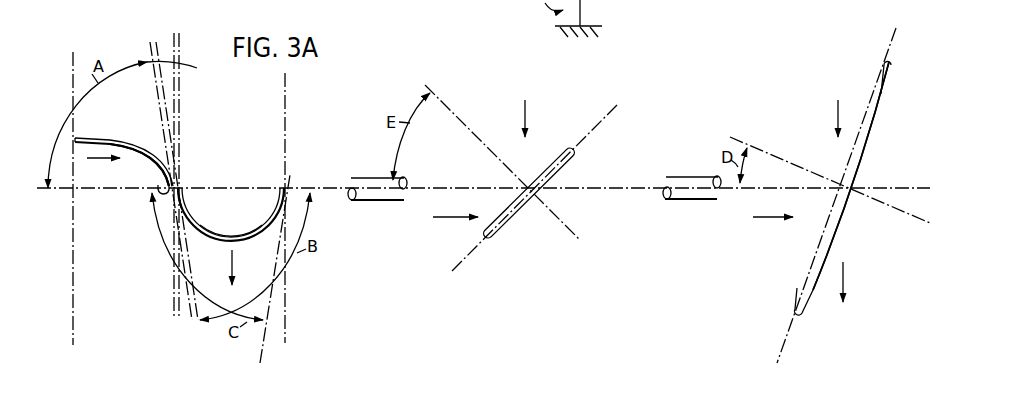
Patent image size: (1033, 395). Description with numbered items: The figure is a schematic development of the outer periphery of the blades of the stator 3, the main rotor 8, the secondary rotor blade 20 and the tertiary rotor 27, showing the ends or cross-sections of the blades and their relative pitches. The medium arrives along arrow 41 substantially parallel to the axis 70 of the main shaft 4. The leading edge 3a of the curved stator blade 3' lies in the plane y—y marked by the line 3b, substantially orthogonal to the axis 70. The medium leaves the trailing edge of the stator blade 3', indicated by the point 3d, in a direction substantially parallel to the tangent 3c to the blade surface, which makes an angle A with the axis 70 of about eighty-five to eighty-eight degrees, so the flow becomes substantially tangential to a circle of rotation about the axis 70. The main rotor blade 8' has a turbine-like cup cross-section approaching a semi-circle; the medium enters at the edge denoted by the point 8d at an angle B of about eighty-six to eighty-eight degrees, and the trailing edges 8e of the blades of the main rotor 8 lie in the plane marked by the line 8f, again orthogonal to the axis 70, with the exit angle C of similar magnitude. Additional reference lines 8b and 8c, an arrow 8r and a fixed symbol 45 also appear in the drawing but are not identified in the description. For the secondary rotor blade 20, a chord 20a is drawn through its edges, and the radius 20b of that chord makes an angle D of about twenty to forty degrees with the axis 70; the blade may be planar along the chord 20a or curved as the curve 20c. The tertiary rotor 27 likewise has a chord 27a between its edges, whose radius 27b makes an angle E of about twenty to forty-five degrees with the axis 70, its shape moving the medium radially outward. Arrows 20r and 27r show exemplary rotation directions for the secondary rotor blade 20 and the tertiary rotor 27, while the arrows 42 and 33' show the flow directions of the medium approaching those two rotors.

The stator 3 is at (124, 140).
The stator blade 3' is at (139, 152).
The leading edge of stator blade 3a is at (73, 141).
The line designating plane y—y 3b is at (75, 312).
The tangent to curved surface of stator blade 3c is at (156, 82).
The trailing edge point of stator blade 3d is at (165, 188).
The main shaft 4 is at (392, 202).
The main rotor 8 is at (231, 192).
The main rotor blade 8' is at (231, 223).
The vertical reference line 8b is at (181, 128).
The inclined reference line 8c is at (196, 340).
The entry edge point of main rotor blade 8d is at (183, 183).
The trailing edges of main rotor blades 8e is at (286, 182).
The line designating plane of trailing edges 8f is at (286, 320).
The direction of movement of channel member 8r is at (245, 266).
The secondary rotor blade 20 is at (888, 72).
The chord of secondary rotor blade 20a is at (912, 22).
The radius of chord 20b is at (768, 134).
The curve 20c is at (871, 152).
The arrow showing direction of rotation of secondary rotor 20r is at (835, 120).
The tertiary rotor 27 is at (557, 185).
The chord of tertiary rotor blade 27a is at (603, 118).
The radius of chord 27b is at (466, 127).
The arrow showing direction of rotation of tertiary rotor 27r is at (535, 116).
The arrow showing direction of flow 33' is at (454, 230).
The arrow showing direction of flow of medium 41 is at (105, 159).
The arrow showing direction of flow 42 is at (772, 218).
The fixed pivot support 45 is at (583, 16).
The axis of main shaft 70 is at (68, 192).